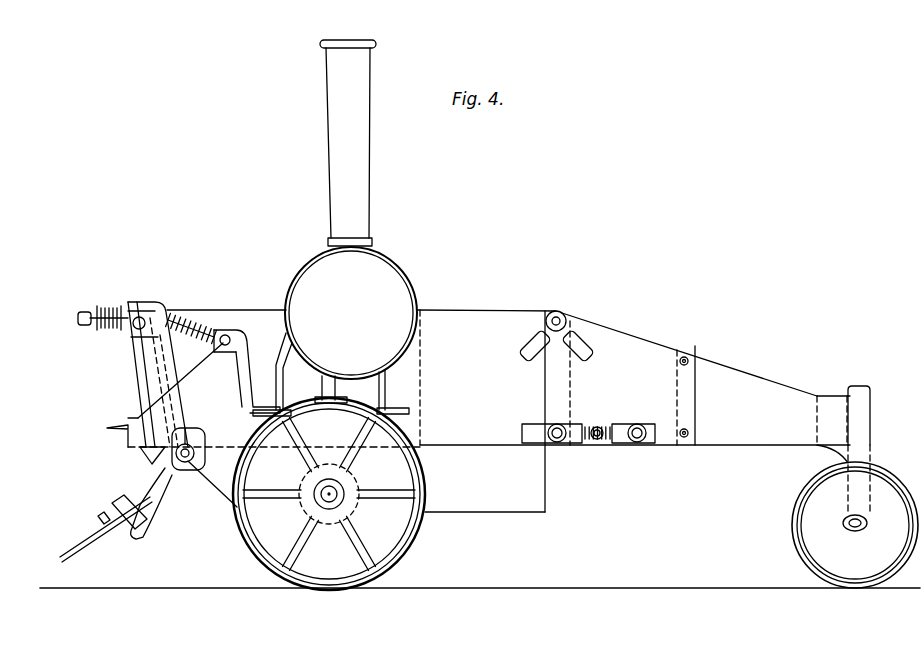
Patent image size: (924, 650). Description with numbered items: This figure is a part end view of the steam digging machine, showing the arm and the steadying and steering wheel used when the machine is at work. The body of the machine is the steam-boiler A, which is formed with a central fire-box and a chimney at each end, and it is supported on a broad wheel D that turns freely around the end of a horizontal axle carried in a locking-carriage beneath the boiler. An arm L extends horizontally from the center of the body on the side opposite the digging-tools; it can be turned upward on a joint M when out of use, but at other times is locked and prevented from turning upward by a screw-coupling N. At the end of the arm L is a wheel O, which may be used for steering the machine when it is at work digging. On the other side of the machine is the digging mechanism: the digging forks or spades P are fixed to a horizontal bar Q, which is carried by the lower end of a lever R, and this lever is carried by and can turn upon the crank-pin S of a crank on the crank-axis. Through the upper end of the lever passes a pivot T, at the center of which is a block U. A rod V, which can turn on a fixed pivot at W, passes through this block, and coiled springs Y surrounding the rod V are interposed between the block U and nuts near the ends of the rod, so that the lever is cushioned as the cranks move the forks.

The steam-boiler A is at (335, 228).
The broad wheel D is at (333, 494).
The arm L is at (588, 416).
The joint M is at (562, 315).
The screw-coupling N is at (596, 421).
The wheel O is at (855, 487).
The digging fork P is at (106, 529).
The horizontal bar Q is at (120, 525).
The lever R is at (168, 496).
The crank-pin S is at (152, 455).
The pivot T is at (139, 313).
The block U is at (140, 331).
The rod V is at (165, 384).
The fixed pivot W is at (226, 347).
The coiled spring Y is at (191, 330).